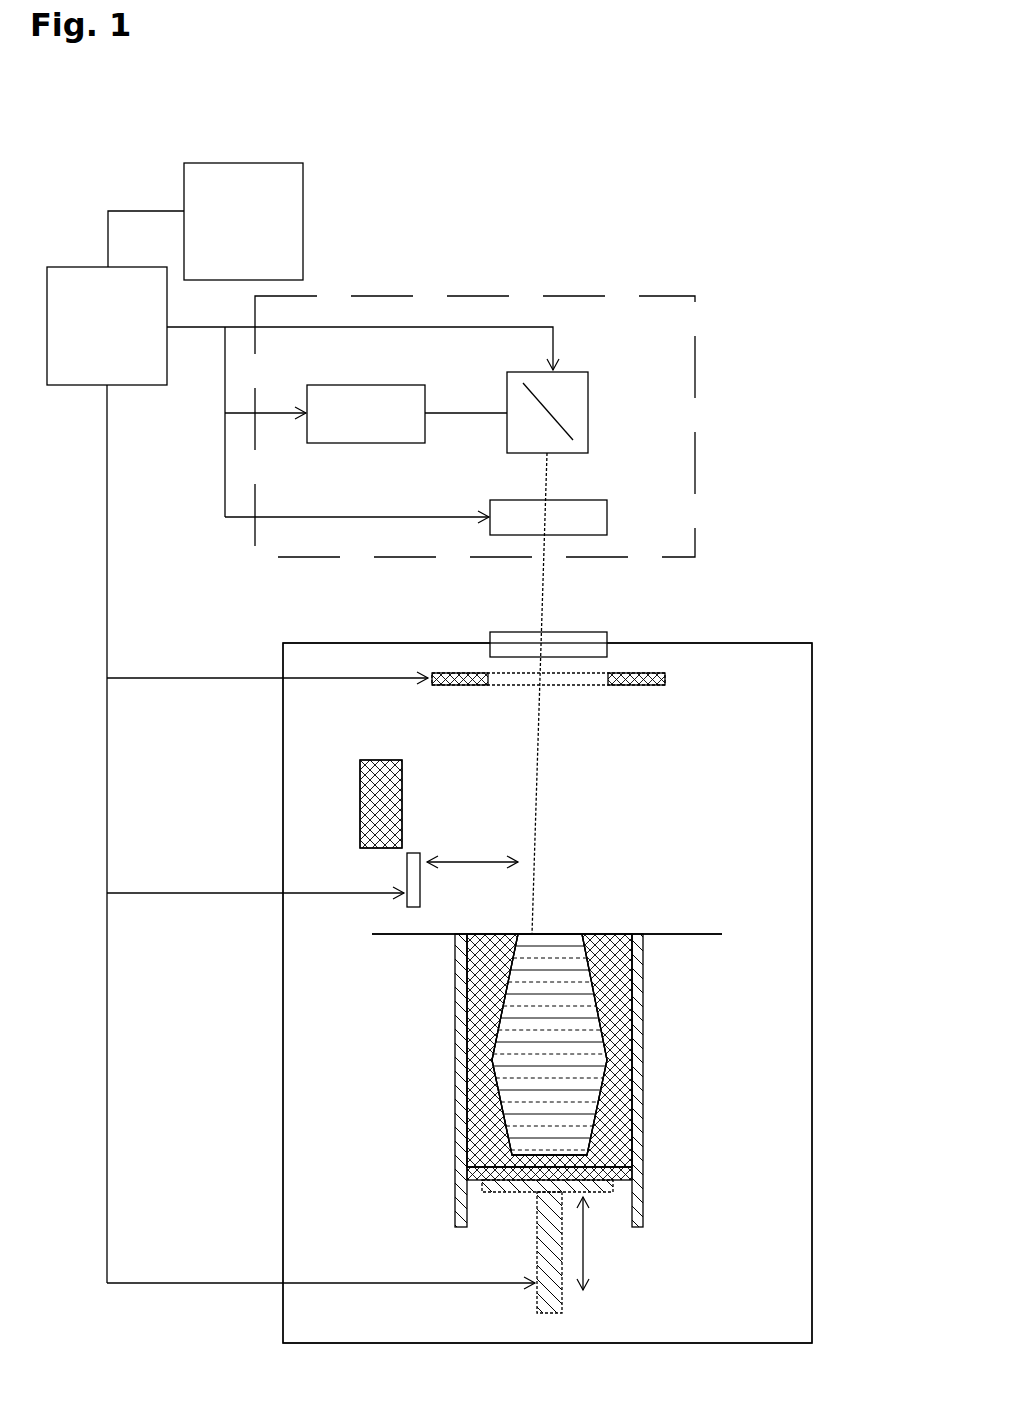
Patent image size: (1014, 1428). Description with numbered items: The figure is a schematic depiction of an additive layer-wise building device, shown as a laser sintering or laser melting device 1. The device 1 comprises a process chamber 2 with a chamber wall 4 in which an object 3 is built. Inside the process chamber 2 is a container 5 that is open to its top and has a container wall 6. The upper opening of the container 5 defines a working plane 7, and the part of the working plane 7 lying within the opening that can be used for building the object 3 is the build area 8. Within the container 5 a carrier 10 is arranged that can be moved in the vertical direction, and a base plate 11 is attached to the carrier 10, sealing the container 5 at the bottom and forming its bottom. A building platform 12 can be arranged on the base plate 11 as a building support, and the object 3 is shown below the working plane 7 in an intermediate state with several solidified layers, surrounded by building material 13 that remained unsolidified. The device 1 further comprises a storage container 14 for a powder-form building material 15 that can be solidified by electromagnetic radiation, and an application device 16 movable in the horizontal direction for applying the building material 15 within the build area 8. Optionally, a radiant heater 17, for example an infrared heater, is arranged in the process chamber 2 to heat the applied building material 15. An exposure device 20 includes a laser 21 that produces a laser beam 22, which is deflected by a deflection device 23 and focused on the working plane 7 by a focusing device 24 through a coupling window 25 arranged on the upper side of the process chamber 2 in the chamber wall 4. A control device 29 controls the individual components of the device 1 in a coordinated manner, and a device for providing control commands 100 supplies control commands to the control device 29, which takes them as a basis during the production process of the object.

The laser sintering device 1 is at (441, 753).
The process chamber 2 is at (731, 680).
The object 3 is at (645, 982).
The chamber wall 4 is at (283, 1133).
The container 5 is at (650, 1138).
The container wall 6 is at (642, 1078).
The working plane 7 is at (695, 933).
The build area 8 is at (605, 933).
The carrier 10 is at (527, 1185).
The base plate 11 is at (480, 1185).
The building platform 12 is at (462, 1165).
The building material 13 is at (455, 975).
The storage container 14 is at (382, 758).
The building material 15 is at (403, 805).
The application device 16 is at (410, 875).
The radiant heater 17 is at (460, 675).
The exposure device 20 is at (695, 411).
The laser 21 is at (365, 437).
The laser beam 22 is at (447, 412).
The deflection device 23 is at (582, 385).
The focusing device 24 is at (585, 512).
The coupling window 25 is at (585, 645).
The control device 29 is at (107, 326).
The device for providing control commands 100 is at (243, 221).